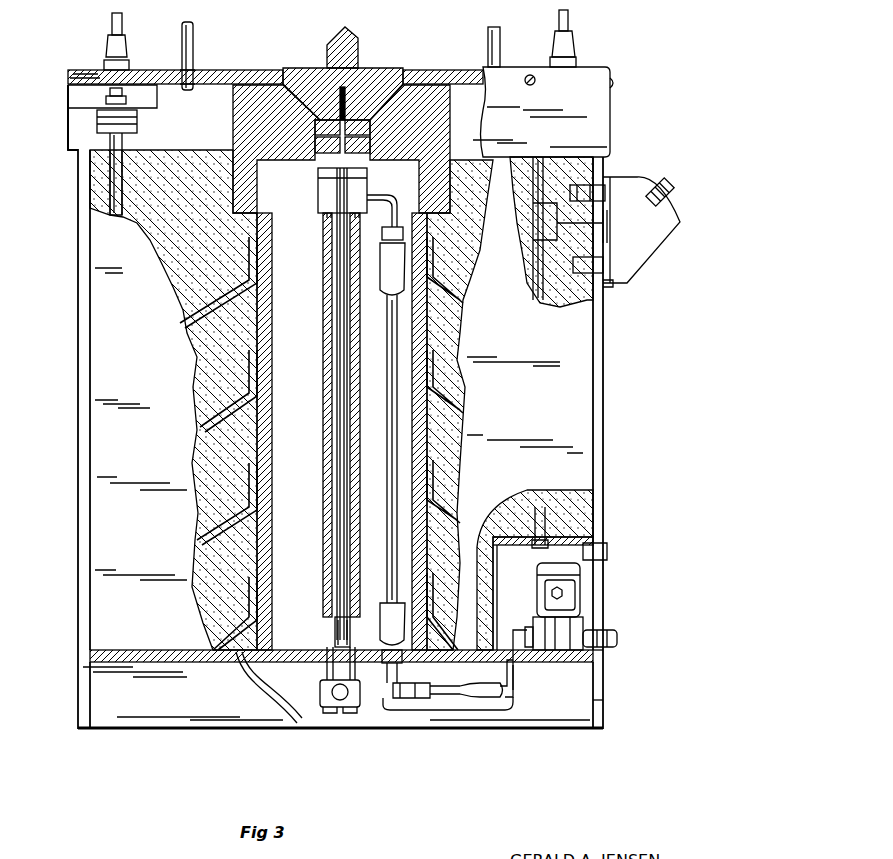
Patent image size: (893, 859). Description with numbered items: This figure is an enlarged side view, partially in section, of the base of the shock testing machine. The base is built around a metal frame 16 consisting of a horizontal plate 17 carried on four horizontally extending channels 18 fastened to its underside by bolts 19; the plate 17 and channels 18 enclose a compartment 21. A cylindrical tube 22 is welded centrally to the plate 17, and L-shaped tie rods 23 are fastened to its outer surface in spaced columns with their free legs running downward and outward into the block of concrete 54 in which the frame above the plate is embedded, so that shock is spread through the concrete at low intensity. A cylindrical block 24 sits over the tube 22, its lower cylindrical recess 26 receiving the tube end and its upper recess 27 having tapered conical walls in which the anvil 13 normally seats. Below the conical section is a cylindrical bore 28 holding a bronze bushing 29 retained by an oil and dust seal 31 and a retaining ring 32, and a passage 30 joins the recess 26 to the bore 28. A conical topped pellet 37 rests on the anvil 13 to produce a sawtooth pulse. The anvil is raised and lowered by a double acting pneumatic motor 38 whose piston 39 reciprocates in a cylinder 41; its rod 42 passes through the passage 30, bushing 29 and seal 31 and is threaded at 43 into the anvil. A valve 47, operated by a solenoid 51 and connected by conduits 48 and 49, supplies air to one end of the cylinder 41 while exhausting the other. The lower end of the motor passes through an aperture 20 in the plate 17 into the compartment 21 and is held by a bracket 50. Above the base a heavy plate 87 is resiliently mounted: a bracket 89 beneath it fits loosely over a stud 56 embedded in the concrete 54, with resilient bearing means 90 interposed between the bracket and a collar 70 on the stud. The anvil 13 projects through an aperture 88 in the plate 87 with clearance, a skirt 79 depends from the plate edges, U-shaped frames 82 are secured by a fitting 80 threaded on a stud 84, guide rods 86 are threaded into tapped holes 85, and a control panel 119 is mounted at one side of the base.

The anvil 13 is at (367, 68).
The metal frame 16 is at (230, 663).
The horizontal plate 17 is at (131, 665).
The horizontally extending channels 18 is at (603, 705).
The bolts 19 is at (603, 663).
The aperture 20 is at (320, 670).
The compartment 21 is at (530, 705).
The cylindrical tube 22 is at (257, 322).
The L-shaped tie rods 23 is at (427, 352).
The cylindrical block 24 is at (443, 95).
The cylindrical recess 26 is at (425, 208).
The recess 27 is at (298, 95).
The cylindrical bore 28 is at (370, 125).
The bronze bushing 29 is at (370, 145).
The passage 30 is at (360, 165).
The oil and dust seal 31 is at (315, 142).
The retaining ring 32 is at (315, 127).
The conical topped pellet 37 is at (348, 34).
The double acting pneumatic motor 38 is at (323, 320).
The piston 39 is at (350, 614).
The cylinder 41 is at (335, 640).
The rod 42 is at (337, 530).
The threaded connection 43 is at (346, 100).
The valve 47 is at (585, 630).
The conduits 48 is at (387, 315).
The conduits 49 is at (410, 700).
The bracket 50 is at (262, 680).
The solenoid 51 is at (545, 605).
The block of concrete 54 is at (78, 380).
The stud 56 is at (123, 176).
The collar 70 is at (130, 134).
The skirt 79 is at (68, 150).
The fitting 80 is at (110, 40).
The U-shaped frames 82 is at (569, 17).
The stud 84 is at (107, 70).
The tapped holes 85 is at (193, 72).
The guide rods 86 is at (193, 30).
The heavy plate 87 is at (150, 71).
The aperture 88 is at (413, 68).
The bracket 89 is at (68, 103).
The resilient bearing means 90 is at (137, 127).
The control panel 119 is at (640, 255).